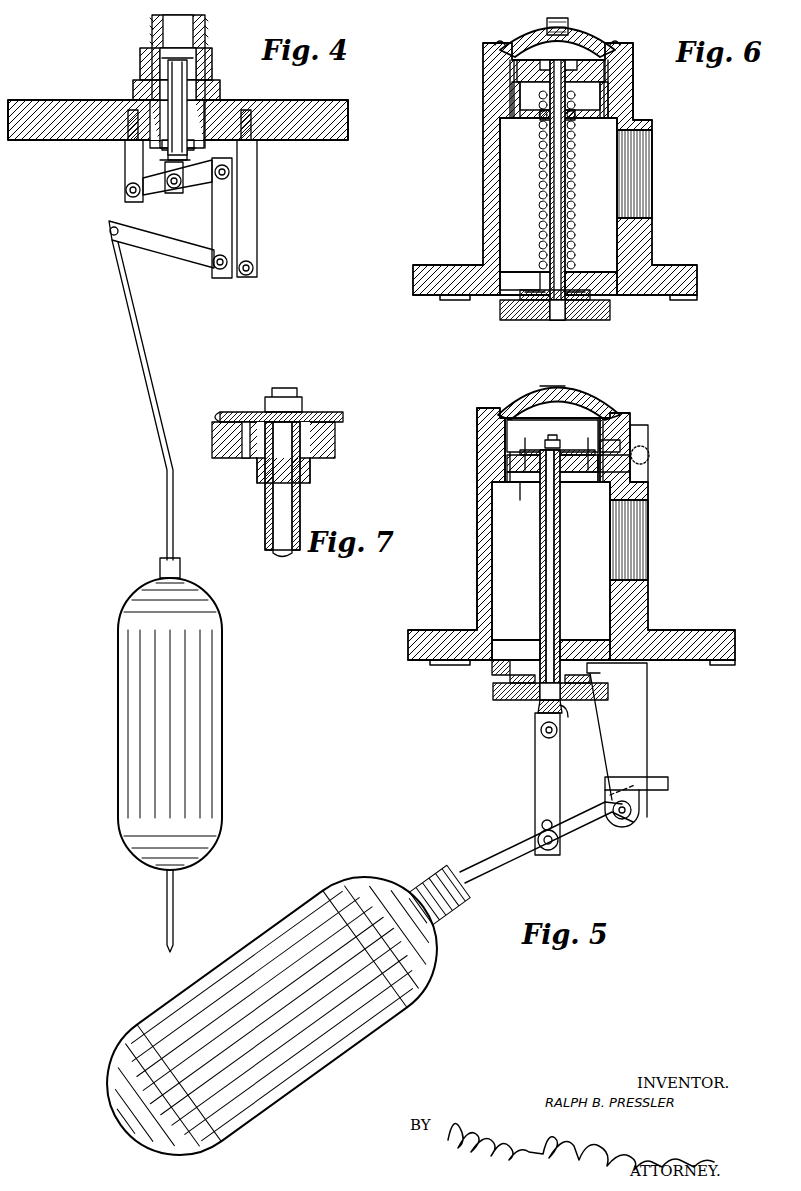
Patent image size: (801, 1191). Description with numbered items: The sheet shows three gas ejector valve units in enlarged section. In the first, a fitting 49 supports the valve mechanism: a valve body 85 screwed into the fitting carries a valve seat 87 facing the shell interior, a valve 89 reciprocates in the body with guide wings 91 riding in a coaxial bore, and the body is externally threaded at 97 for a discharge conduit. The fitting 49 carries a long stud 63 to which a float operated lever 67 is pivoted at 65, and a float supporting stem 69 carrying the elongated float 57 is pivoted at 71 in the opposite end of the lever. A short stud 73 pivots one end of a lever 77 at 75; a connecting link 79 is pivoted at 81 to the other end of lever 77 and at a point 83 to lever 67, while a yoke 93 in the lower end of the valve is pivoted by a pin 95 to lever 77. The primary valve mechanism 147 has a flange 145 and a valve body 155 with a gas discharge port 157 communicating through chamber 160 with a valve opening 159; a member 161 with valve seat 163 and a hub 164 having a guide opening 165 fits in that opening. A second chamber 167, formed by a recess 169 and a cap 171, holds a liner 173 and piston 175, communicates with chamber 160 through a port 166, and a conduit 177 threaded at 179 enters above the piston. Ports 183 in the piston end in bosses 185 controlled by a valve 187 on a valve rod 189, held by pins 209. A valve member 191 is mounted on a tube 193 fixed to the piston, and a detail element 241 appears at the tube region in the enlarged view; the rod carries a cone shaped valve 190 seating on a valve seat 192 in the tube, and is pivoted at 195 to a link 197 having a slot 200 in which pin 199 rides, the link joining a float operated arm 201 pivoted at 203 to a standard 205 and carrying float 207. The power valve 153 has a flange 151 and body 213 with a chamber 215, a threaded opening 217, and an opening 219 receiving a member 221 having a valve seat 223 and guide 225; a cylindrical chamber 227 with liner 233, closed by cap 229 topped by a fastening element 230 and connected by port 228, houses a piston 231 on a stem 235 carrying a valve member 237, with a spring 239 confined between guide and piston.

In FIG. 4, the fitting 49 is at (348, 118).
In FIG. 4, the elongated float 57 is at (222, 660).
In FIG. 4, the long stud 63 is at (257, 168).
In FIG. 4, the pivot 65 is at (246, 278).
In FIG. 4, the float operated lever 67 is at (160, 250).
In FIG. 4, the float supporting stem 69 is at (150, 382).
In FIG. 4, the pivot 71 is at (110, 232).
In FIG. 4, the short stud 73 is at (125, 162).
In FIG. 4, the pivot 75 is at (126, 190).
In FIG. 4, the lever 77 is at (150, 196).
In FIG. 4, the connecting link 79 is at (220, 215).
In FIG. 4, the pivot 81 is at (229, 175).
In FIG. 4, the pivot point 83 is at (216, 278).
In FIG. 4, the valve body 85 is at (212, 55).
In FIG. 4, the valve seat 87 is at (205, 40).
In FIG. 4, the valve 89 is at (148, 60).
In FIG. 4, the guide wings 91 is at (187, 90).
In FIG. 4, the yoke 93 is at (183, 188).
In FIG. 4, the pin 95 is at (180, 176).
In FIG. 4, the external threads 97 is at (152, 18).
In FIG. 5, the flange 145 is at (708, 662).
In FIG. 5, the valve mechanism 147 is at (648, 605).
In FIG. 5, the valve body 155 is at (475, 590).
In FIG. 5, the gas discharge port 157 is at (648, 508).
In FIG. 5, the valve opening 159 is at (612, 640).
In FIG. 5, the chamber 160 is at (591, 561).
In FIG. 5, the valve seat member 161 is at (490, 668).
In FIG. 5, the valve seat 163 is at (507, 678).
In FIG. 5, the hub 164 is at (530, 630).
In FIG. 5, the valve stem guide opening 165 is at (568, 638).
In FIG. 5, the port 166 is at (524, 505).
In FIG. 5, the second chamber 167 is at (552, 436).
In FIG. 5, the recess 169 is at (505, 440).
In FIG. 5, the cap 171 is at (580, 388).
In FIG. 5, the liner 173 is at (505, 462).
In FIG. 7, the piston 175 is at (335, 438).
In FIG. 5, the piston 175 is at (505, 482).
In FIG. 5, the conduit 177 is at (630, 462).
In FIG. 5, the internal threads 179 is at (620, 445).
In FIG. 7, the ports 183 is at (246, 458).
In FIG. 5, the ports 183 is at (530, 488).
In FIG. 7, the bosses 185 is at (248, 395).
In FIG. 5, the bosses 185 is at (545, 440).
In FIG. 7, the valve 187 is at (255, 410).
In FIG. 5, the valve 187 is at (565, 448).
In FIG. 7, the valve rod 189 is at (280, 517).
In FIG. 5, the valve rod 189 is at (554, 500).
In FIG. 5, the cone shaped valve 190 is at (576, 722).
In FIG. 5, the valve member 191 is at (496, 691).
In FIG. 5, the valve seat 192 is at (538, 708).
In FIG. 7, the tube 193 is at (300, 495).
In FIG. 5, the tube 193 is at (560, 588).
In FIG. 5, the pivot 195 is at (540, 734).
In FIG. 5, the link 197 is at (533, 772).
In FIG. 5, the pivot pin 199 is at (540, 839).
In FIG. 5, the slot 200 is at (553, 818).
In FIG. 5, the float operated arm 201 is at (500, 875).
In FIG. 5, the pivot 203 is at (632, 820).
In FIG. 5, the standard 205 is at (647, 735).
In FIG. 5, the float 207 is at (435, 975).
In FIG. 5, the pins 209 is at (648, 428).
In FIG. 6, the flange 151 is at (680, 296).
In FIG. 6, the power valve 153 is at (652, 228).
In FIG. 6, the valve body 213 is at (633, 100).
In FIG. 6, the chamber 215 is at (657, 173).
In FIG. 6, the opening 217 is at (652, 145).
In FIG. 6, the opening 219 is at (612, 280).
In FIG. 6, the member 221 is at (605, 305).
In FIG. 6, the valve seat 223 is at (500, 320).
In FIG. 6, the valve stem guide 225 is at (580, 272).
In FIG. 6, the cylindrical chamber 227 is at (590, 62).
In FIG. 6, the port 228 is at (522, 125).
In FIG. 6, the cap 229 is at (525, 35).
In FIG. 6, the nut 230 is at (568, 22).
In FIG. 6, the piston 231 is at (600, 78).
In FIG. 6, the liner 233 is at (512, 68).
In FIG. 6, the stem 235 is at (570, 130).
In FIG. 6, the valve member 237 is at (557, 320).
In FIG. 6, the spring 239 is at (576, 210).
In FIG. 7, the flange 241 is at (257, 475).